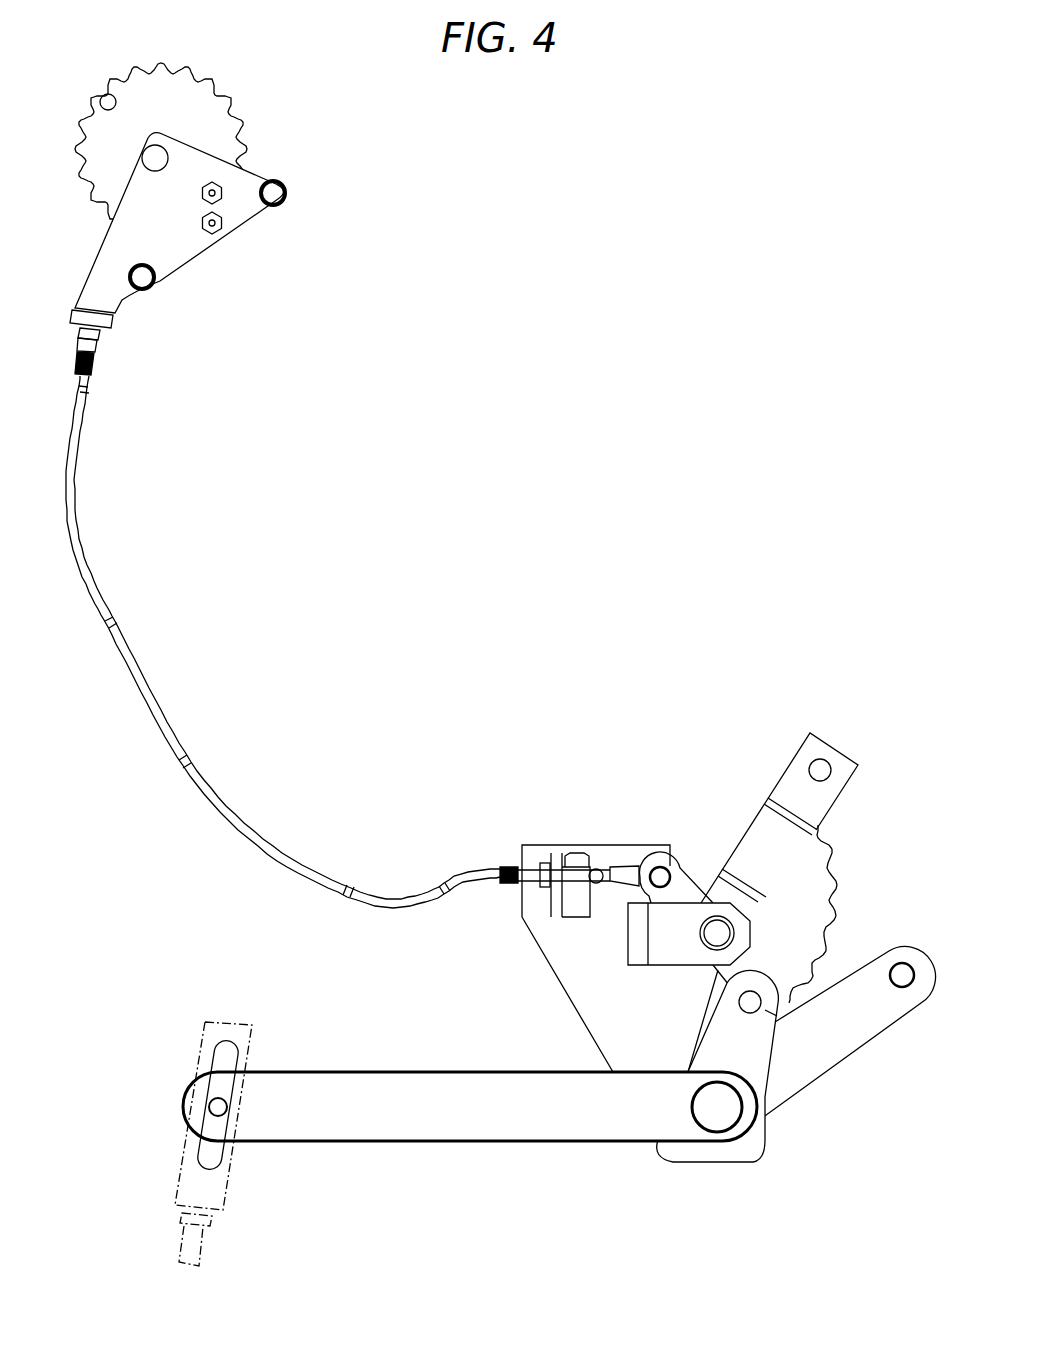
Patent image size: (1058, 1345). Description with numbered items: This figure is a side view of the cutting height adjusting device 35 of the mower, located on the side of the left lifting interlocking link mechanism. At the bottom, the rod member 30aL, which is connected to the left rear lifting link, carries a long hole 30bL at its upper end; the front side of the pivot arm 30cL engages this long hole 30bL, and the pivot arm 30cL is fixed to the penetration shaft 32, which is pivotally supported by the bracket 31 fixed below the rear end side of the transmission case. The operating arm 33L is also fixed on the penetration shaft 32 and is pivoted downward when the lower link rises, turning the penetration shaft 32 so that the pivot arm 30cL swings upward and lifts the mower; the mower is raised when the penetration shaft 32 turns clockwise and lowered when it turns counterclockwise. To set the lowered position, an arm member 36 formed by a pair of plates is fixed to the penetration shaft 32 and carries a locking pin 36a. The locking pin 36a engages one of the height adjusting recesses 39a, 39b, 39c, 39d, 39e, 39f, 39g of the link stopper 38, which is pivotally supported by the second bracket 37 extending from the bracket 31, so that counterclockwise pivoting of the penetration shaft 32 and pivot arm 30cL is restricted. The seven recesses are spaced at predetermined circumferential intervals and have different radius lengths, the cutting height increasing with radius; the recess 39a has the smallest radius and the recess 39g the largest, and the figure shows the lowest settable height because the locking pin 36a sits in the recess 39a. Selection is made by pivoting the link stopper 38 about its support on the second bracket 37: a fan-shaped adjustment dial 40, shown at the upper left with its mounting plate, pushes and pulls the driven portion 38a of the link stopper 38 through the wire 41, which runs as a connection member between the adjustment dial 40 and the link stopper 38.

The rod member 30aL is at (228, 1205).
The long hole 30bL is at (217, 1153).
The pivot arm 30cL is at (400, 1135).
The bracket 31 is at (598, 1015).
The penetration shaft 32 is at (730, 1127).
The operating arm 33L is at (837, 1053).
The cutting height adjusting device 35 is at (297, 237).
The arm member 36 is at (757, 1058).
The locking pin 36a is at (760, 1012).
The second bracket 37 is at (630, 943).
The link stopper 38 is at (786, 863).
The driven portion 38a is at (680, 883).
The height adjusting recess 39a is at (770, 993).
The height adjusting recess 39b is at (800, 985).
The height adjusting recess 39c is at (822, 957).
The height adjusting recess 39d is at (832, 922).
The height adjusting recess 39e is at (833, 893).
The height adjusting recess 39f is at (830, 858).
The height adjusting recess 39g is at (820, 832).
The adjustment dial 40 is at (222, 122).
The wire 41 is at (77, 470).